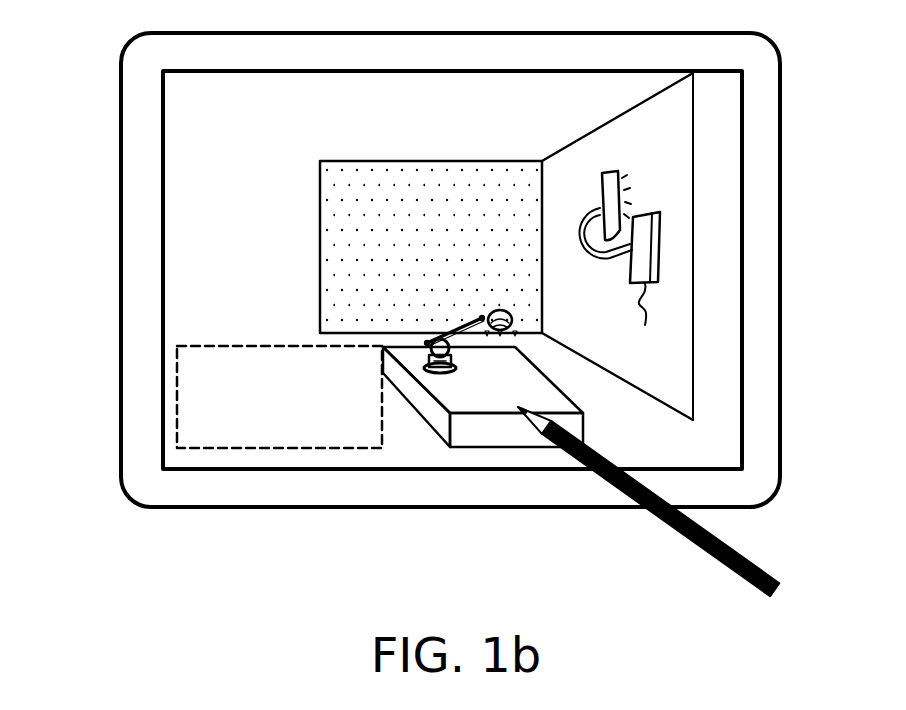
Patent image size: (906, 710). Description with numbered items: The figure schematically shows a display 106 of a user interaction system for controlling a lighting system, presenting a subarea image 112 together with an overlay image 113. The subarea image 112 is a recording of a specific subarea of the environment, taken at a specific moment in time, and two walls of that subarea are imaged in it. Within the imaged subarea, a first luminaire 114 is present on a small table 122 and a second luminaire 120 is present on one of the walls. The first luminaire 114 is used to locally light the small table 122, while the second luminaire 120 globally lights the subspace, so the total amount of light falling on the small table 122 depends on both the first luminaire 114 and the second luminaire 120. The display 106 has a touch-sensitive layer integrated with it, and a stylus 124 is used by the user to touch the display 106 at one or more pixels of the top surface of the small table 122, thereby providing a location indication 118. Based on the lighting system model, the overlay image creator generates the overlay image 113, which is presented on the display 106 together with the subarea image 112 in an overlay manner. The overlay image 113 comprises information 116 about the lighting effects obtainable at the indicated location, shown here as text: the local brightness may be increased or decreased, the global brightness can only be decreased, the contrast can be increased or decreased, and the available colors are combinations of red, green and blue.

The display 106 is at (122, 41).
The subarea image 112 is at (200, 105).
The overlay image 113 is at (200, 160).
The first luminaire 114 is at (430, 358).
The information 116 is at (177, 386).
The location indication 118 is at (513, 407).
The second luminaire 120 is at (647, 233).
The small table 122 is at (487, 395).
The stylus 124 is at (603, 477).